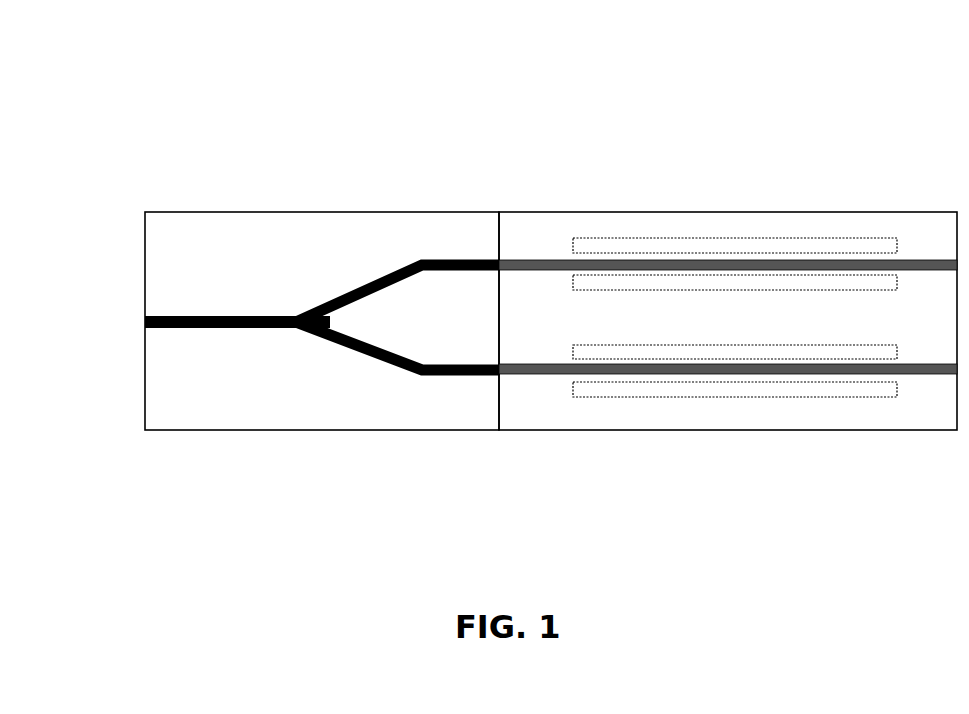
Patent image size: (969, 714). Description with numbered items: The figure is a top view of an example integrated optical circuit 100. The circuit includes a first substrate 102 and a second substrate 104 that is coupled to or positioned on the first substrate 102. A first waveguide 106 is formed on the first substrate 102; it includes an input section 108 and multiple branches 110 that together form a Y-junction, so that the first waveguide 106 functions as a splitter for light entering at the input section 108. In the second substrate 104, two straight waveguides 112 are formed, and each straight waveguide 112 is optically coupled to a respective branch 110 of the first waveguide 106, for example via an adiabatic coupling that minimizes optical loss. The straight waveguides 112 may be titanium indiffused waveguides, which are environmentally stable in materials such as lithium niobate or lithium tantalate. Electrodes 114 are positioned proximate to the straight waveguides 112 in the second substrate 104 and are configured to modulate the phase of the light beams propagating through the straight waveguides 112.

The integrated optical circuit 100 is at (84, 109).
The first substrate 102 is at (322, 212).
The second substrate 104 is at (727, 212).
The first waveguide 106 is at (284, 349).
The input section 108 is at (238, 312).
The branches 110 is at (381, 276).
The straight waveguides 112 is at (945, 271).
The electrodes 114 is at (598, 243).